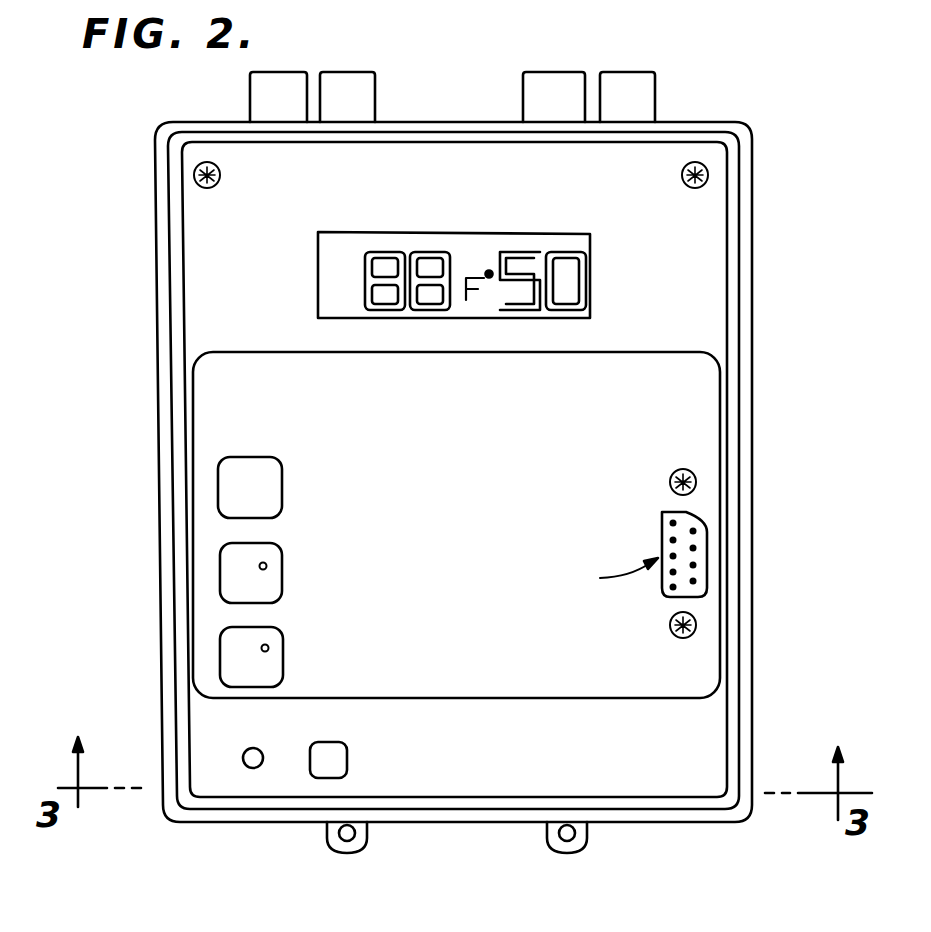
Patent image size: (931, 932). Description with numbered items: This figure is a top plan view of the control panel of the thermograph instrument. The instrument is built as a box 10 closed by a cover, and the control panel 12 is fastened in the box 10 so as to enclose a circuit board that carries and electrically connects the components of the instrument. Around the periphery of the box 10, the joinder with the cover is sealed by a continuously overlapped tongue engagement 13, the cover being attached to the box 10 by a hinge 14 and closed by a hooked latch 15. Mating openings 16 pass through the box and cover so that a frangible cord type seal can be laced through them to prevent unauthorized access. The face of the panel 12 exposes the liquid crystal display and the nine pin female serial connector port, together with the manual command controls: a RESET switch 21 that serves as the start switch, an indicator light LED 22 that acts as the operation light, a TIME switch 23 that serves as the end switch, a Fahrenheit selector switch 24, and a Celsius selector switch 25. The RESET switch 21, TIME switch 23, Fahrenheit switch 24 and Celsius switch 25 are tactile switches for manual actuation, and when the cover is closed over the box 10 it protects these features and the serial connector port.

The box 10 is at (157, 305).
The control panel 12 is at (491, 481).
The continuously overlapped tongue engagement 13 is at (186, 710).
The hinge 14 is at (375, 86).
The hooked latch 15 is at (562, 844).
The mating openings 16 is at (343, 844).
The RESET switch 21 is at (333, 761).
The indicator light LED 22 is at (252, 768).
The TIME switch 23 is at (281, 460).
The Fahrenheit switch 24 is at (283, 553).
The Celsius switch 25 is at (283, 641).